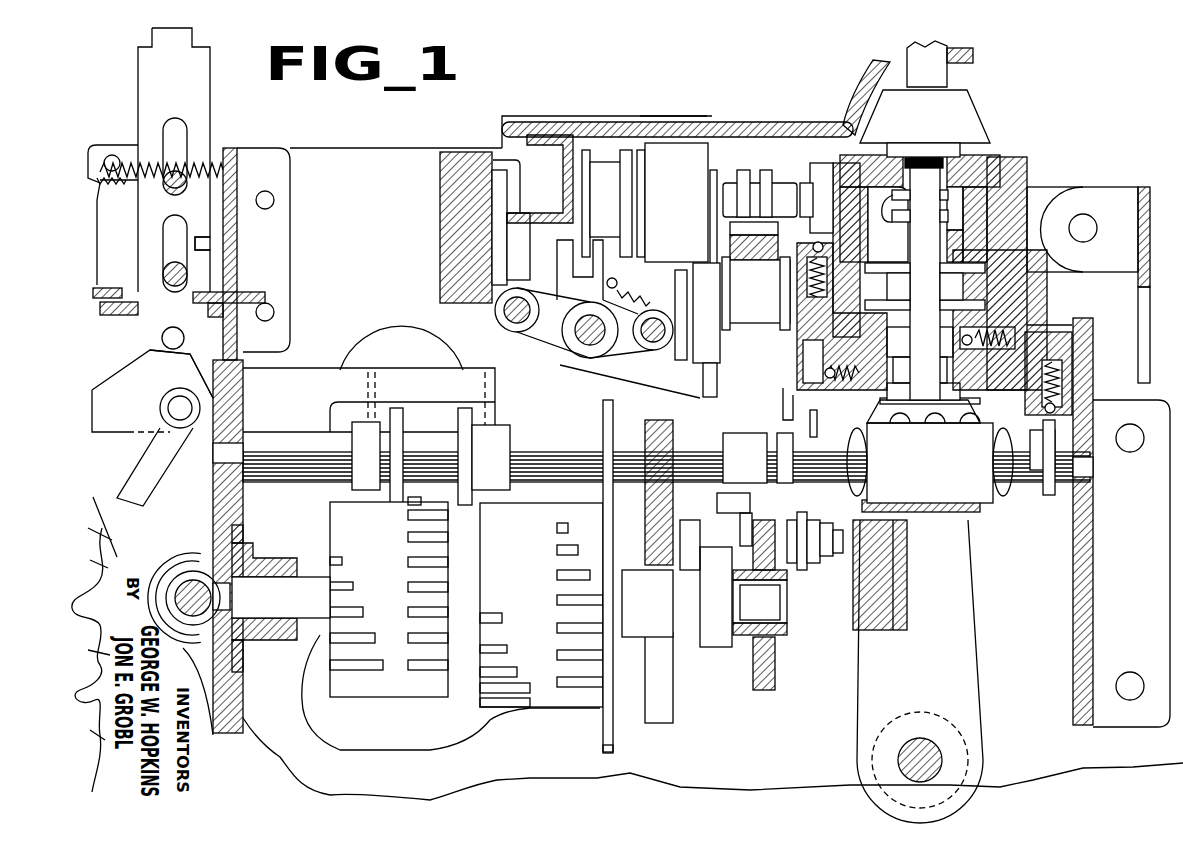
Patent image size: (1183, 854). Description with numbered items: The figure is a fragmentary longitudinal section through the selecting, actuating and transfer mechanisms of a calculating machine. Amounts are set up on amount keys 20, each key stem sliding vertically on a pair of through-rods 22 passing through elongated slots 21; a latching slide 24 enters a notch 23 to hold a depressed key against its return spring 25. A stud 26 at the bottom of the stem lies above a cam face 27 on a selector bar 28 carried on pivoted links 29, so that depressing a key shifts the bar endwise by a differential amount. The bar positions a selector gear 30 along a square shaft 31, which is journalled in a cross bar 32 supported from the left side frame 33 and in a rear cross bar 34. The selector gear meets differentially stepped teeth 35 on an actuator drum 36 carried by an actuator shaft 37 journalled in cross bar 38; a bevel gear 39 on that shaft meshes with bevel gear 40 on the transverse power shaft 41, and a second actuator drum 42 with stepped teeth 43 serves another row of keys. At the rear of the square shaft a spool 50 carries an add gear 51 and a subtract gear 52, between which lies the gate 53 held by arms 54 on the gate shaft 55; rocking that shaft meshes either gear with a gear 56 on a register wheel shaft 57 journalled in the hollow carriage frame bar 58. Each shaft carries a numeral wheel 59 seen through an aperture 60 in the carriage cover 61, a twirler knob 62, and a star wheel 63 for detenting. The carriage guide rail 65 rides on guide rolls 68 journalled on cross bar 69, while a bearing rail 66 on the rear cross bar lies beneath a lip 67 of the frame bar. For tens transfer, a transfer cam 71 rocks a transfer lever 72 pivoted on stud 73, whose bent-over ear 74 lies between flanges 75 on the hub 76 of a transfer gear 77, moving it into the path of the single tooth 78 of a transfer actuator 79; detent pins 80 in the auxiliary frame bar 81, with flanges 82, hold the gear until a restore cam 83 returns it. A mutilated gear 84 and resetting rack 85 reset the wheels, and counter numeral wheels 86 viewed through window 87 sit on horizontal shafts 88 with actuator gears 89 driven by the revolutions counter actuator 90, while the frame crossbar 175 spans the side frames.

The amount key 20 is at (206, 101).
The elongated slots 21 is at (166, 132).
The through-rods 22 is at (168, 186).
The notch 23 is at (200, 241).
The latching slide 24 is at (249, 292).
The return spring 25 is at (221, 150).
The stud 26 is at (182, 337).
The cam face 27 is at (192, 378).
The selector bar 28 is at (124, 430).
The pivoted links 29 is at (160, 462).
The selector gear 30 is at (440, 420).
The square shaft 31 is at (526, 440).
The cross bar 32 is at (243, 497).
The left side frame 33 is at (343, 148).
The cross bar 34 is at (1087, 540).
The differentially stepped teeth 35 is at (340, 558).
The actuator drum 36 is at (375, 698).
The actuator shaft 37 is at (312, 610).
The cross bar 38 is at (770, 660).
The bevel gear 39 is at (272, 562).
The bevel gear 40 is at (205, 555).
The transverse power shaft 41 is at (191, 580).
The second actuator drum 42 is at (541, 605).
The differential stepped teeth 43 is at (567, 630).
The spool 50 is at (930, 463).
The add gear 51 is at (864, 446).
The subtract gear 52 is at (992, 480).
The gate 53 is at (925, 512).
The arms 54 is at (965, 592).
The gate shaft 55 is at (945, 752).
The gear 56 is at (955, 422).
The register wheel shaft 57 is at (915, 254).
The carriage frame bar 58 is at (1040, 169).
The numeral wheel 59 is at (975, 125).
The aperture 60 is at (872, 85).
The carriage cover 61 is at (805, 124).
The twirler knob 62 is at (940, 70).
The star wheel 63 is at (893, 338).
The guide rail 65 is at (528, 142).
The bearing rail 66 is at (1062, 352).
The lip 67 is at (1052, 320).
The guide rolls 68 is at (520, 232).
The cross bar 69 is at (445, 210).
The transfer cam 71 is at (960, 395).
The transfer lever 72 is at (880, 395).
The stud 73 is at (805, 366).
The bent-over ear 74 is at (785, 400).
The flanges 75 is at (805, 425).
The hub 76 is at (758, 458).
The transfer gear 77 is at (715, 500).
The single tooth 78 is at (693, 697).
The transfer actuator 79 is at (690, 672).
The detent pins 80 is at (845, 545).
The auxiliary frame bar 81 is at (870, 630).
The flanges 82 is at (810, 565).
The restore cam 83 is at (745, 530).
The mutilated gear 84 is at (900, 226).
The resetting rack 85 is at (975, 190).
The numeral wheels 86 is at (706, 166).
The window 87 is at (705, 116).
The horizontal shaft 88 is at (790, 178).
The actuator gear 89 is at (625, 158).
The revolutions counter actuator 90 is at (552, 384).
The frame crossbar 175 is at (658, 412).